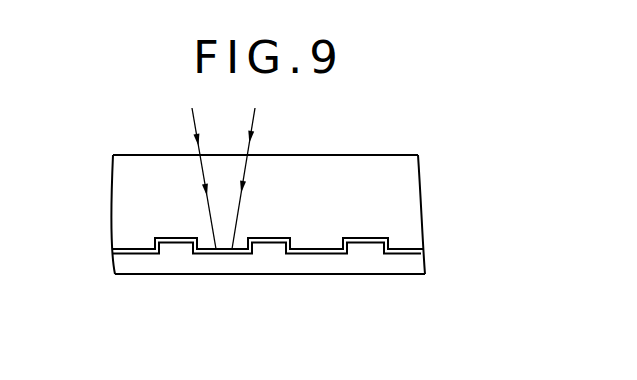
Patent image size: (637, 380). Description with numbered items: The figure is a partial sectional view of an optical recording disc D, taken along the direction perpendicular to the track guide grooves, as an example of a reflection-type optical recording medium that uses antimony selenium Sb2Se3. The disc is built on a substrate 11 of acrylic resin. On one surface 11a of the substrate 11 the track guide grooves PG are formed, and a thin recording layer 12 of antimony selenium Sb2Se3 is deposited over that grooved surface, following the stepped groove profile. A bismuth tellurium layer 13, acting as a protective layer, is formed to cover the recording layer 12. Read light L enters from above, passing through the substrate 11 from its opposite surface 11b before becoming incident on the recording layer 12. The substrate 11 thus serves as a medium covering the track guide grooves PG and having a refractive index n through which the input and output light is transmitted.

The substrate 11 is at (415, 193).
The surface of substrate 11a is at (405, 275).
The upper surface of substrate 11b is at (407, 154).
The recording layer 12 is at (407, 252).
The bismuth tellurium layer 13 is at (145, 263).
The track guide grooves PG is at (328, 243).
The read light L is at (263, 127).
The optical recording disc D is at (88, 201).